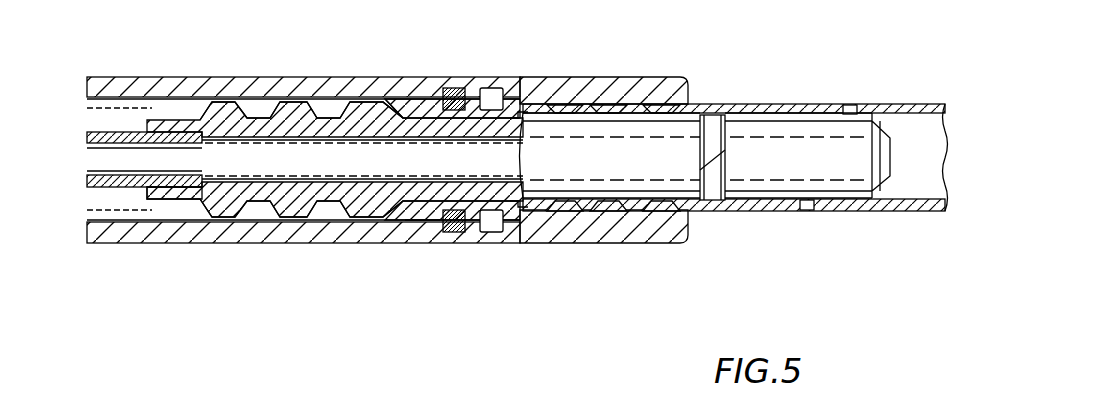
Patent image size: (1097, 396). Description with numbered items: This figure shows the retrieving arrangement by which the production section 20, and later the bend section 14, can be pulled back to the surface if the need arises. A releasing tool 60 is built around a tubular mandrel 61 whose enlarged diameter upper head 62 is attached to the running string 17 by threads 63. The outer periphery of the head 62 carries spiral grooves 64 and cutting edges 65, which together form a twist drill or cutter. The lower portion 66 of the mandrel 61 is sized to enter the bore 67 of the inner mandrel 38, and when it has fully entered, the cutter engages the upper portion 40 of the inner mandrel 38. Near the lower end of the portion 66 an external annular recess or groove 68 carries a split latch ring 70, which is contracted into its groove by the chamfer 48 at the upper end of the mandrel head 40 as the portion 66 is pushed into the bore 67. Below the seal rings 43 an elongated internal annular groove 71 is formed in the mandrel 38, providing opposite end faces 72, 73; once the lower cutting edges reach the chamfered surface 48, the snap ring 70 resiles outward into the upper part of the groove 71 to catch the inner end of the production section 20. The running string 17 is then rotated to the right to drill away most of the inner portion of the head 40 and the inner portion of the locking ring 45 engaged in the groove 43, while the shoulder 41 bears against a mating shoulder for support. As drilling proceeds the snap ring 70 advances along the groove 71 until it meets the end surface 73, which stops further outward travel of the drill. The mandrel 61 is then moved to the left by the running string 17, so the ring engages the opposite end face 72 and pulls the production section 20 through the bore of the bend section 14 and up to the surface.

The bend section 14 is at (208, 230).
The running string 17 is at (117, 131).
The production section 20 is at (918, 211).
The inner mandrel 38 is at (596, 212).
The upper portion of the inner mandrel (mandrel head) 40 is at (421, 214).
The shoulder 41 is at (548, 214).
The groove (seal rings) 43 is at (654, 105).
The locking ring 45 is at (458, 88).
The chamfer 48 is at (388, 208).
The releasing tool 60 is at (330, 220).
The tubular mandrel 61 is at (540, 208).
The upper head 62 is at (283, 130).
The threads 63 is at (163, 194).
The spiral grooves 64 is at (335, 116).
The cutting edges 65 is at (395, 102).
The lower portion of the mandrel 66 is at (676, 232).
The bore of the inner mandrel 67 is at (584, 126).
The external annular recess or groove 68 is at (733, 182).
The split latch ring (snap ring) 70 is at (714, 120).
The elongated internal annular groove 71 is at (790, 112).
The end face 72 is at (713, 203).
The end surface 73 is at (803, 207).